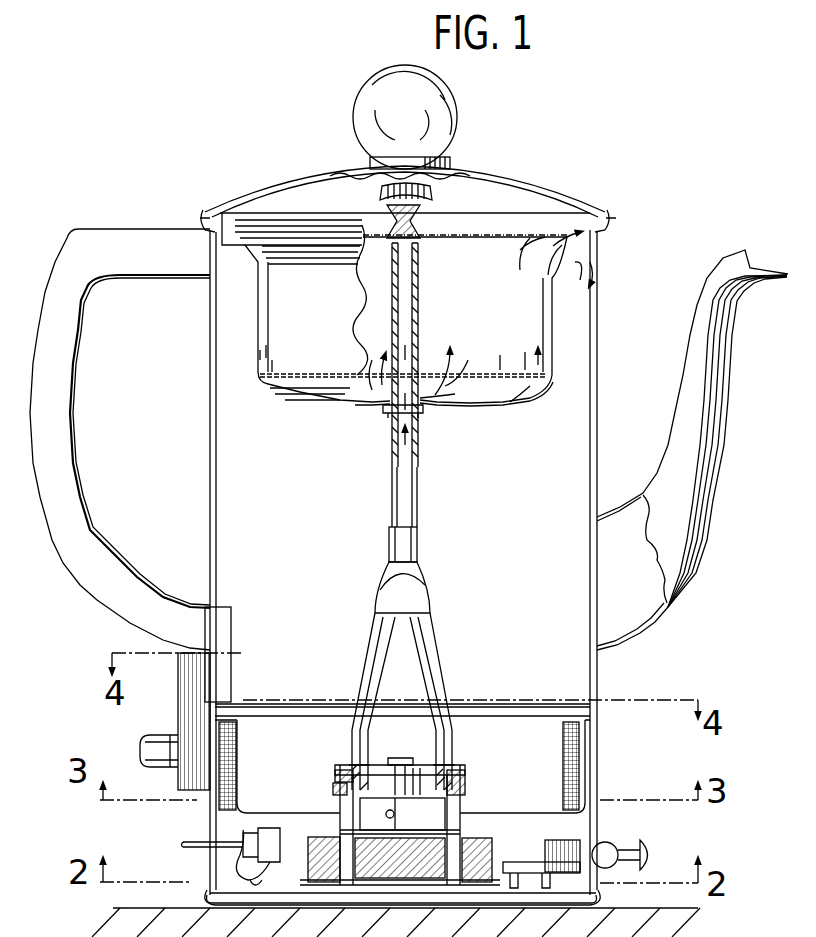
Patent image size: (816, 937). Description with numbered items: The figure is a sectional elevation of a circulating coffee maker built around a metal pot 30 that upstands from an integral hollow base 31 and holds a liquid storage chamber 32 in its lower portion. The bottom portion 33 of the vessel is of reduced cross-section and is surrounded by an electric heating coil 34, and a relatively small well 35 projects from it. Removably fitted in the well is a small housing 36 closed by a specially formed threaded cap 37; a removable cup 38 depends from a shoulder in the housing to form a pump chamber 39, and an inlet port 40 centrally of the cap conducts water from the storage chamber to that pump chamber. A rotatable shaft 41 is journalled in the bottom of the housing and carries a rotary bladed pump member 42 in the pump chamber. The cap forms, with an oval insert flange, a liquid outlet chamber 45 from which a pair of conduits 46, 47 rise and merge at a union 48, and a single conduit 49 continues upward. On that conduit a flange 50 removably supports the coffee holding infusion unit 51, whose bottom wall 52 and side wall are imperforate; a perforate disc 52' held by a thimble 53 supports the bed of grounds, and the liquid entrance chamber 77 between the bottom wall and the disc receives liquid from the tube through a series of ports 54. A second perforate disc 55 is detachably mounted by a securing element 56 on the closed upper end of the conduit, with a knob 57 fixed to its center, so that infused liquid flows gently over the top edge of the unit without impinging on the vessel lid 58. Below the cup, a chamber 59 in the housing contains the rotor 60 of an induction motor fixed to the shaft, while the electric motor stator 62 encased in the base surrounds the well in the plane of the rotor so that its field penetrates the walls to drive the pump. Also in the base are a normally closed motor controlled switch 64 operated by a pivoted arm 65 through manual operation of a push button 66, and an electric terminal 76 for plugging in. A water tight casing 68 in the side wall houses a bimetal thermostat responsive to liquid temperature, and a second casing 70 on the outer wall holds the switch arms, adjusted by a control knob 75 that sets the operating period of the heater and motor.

The metal pot 30 is at (210, 490).
The hollow base 31 is at (597, 748).
The liquid storage chamber 32 is at (578, 685).
The bottom portion 33 is at (565, 723).
The electric heating coil 34 is at (580, 778).
The well 35 is at (462, 832).
The housing 36 is at (465, 802).
The threaded cap 37 is at (460, 775).
The removable cup 38 is at (350, 810).
The pump chamber 39 is at (345, 826).
The inlet port 40 is at (418, 778).
The rotatable shaft 41 is at (402, 758).
The rotary bladed pump member 42 is at (333, 790).
The liquid outlet chamber 45 is at (340, 772).
The conduit 46 is at (358, 672).
The conduit 47 is at (438, 672).
The union 48 is at (407, 600).
The conduit 49 is at (403, 506).
The flange 50 is at (420, 411).
The coffee holding infusion unit 51 is at (552, 330).
The bottom wall 52 is at (519, 393).
The perforate disc 52' is at (438, 348).
The thimble 53 is at (420, 292).
The ports 54 is at (450, 400).
The second perforate disc 55 is at (458, 237).
The securing element 56 is at (420, 218).
The knob 57 is at (394, 211).
The vessel lid 58 is at (297, 178).
The chamber 59 is at (325, 880).
The rotor 60 is at (320, 850).
The electric motor stator 62 is at (490, 856).
The motor controlled switch 64 is at (555, 845).
The pivoted arm 65 is at (523, 862).
The push button 66 is at (632, 845).
The water tight casing 68 is at (228, 616).
The second casing 70 is at (190, 667).
The control knob 75 is at (160, 755).
The electric terminal 76 is at (195, 842).
The liquid entrance chamber 77 is at (367, 395).